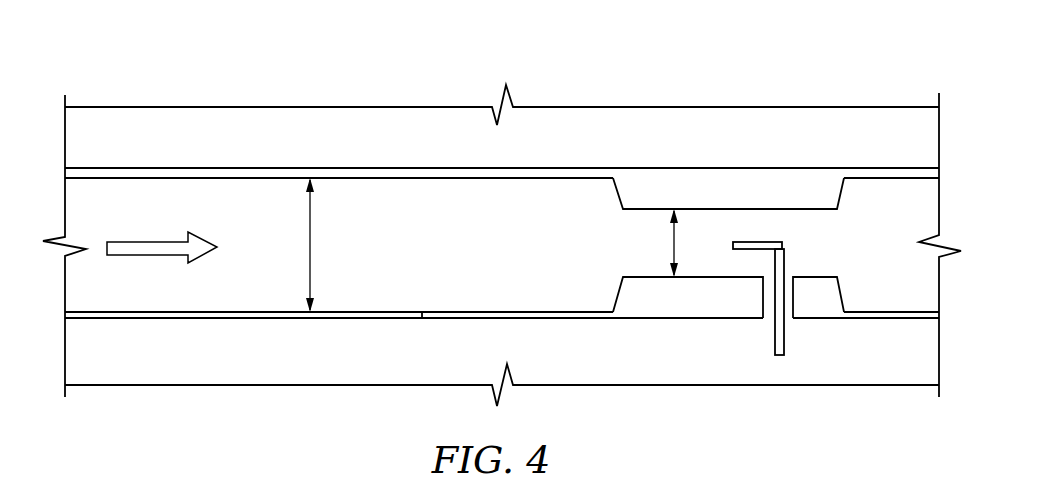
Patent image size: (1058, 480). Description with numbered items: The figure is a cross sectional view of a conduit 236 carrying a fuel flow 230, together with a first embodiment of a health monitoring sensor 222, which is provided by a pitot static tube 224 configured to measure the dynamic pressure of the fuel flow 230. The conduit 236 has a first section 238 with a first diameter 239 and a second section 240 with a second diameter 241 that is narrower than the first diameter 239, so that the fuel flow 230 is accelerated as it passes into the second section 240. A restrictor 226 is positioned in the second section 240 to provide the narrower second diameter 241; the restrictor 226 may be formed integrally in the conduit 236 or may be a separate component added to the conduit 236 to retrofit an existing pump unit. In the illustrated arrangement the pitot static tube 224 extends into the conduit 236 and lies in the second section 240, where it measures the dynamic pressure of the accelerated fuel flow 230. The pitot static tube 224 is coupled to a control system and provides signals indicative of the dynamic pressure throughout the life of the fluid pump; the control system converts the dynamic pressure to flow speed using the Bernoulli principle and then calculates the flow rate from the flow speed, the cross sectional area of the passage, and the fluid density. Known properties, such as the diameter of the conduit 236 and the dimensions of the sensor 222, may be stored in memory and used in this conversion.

The health monitoring sensor 222 is at (130, 90).
The pitot static tube 224 is at (810, 262).
The restrictor 226 is at (600, 198).
The fuel flow 230 is at (152, 240).
The conduit 236 is at (382, 176).
The first section 238 is at (268, 330).
The first diameter 239 is at (307, 240).
The second section 240 is at (672, 333).
The second diameter 241 is at (671, 241).